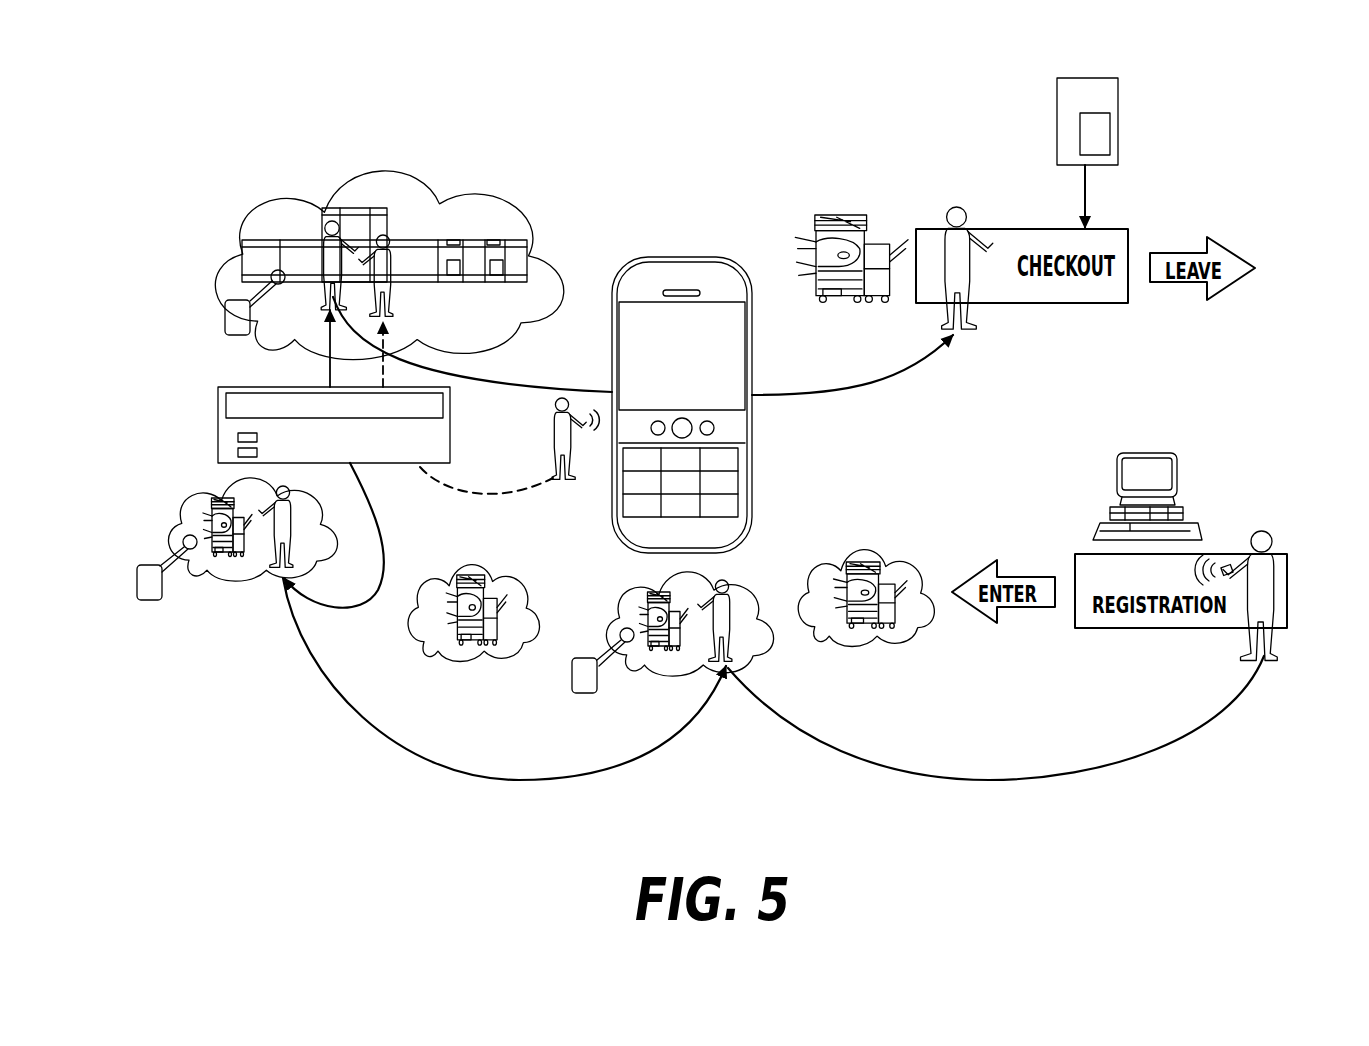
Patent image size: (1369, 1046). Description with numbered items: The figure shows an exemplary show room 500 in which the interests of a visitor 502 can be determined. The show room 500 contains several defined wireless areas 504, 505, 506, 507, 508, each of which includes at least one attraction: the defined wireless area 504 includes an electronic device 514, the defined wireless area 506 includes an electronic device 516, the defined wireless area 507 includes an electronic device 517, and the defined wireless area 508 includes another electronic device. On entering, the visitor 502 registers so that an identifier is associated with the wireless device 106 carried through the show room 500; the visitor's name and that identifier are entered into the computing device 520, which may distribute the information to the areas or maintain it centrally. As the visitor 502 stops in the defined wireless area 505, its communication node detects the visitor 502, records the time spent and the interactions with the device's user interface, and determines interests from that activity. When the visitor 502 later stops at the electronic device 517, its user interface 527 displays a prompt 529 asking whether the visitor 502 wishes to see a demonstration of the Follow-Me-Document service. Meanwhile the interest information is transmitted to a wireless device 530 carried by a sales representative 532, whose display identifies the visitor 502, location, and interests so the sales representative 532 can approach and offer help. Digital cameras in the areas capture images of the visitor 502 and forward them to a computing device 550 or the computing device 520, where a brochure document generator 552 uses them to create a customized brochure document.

The show room 500 is at (898, 788).
The visitor 502 is at (1272, 562).
The defined wireless area 504 is at (880, 641).
The defined wireless area 505 is at (650, 623).
The defined wireless area 506 is at (463, 620).
The defined wireless area 507 is at (206, 561).
The defined wireless area 508 is at (222, 252).
The electronic device 514 is at (845, 612).
The electronic device 516 is at (487, 575).
The electronic device 517 is at (200, 516).
The computing device 520 is at (1147, 453).
The user interface 527 is at (317, 386).
The prompt 529 is at (450, 443).
The wireless device 530 is at (683, 257).
The sales representative 532 is at (550, 425).
The computing device 550 is at (1082, 153).
The brochure document generator 552 is at (1110, 133).
The wireless device 106 is at (1228, 562).